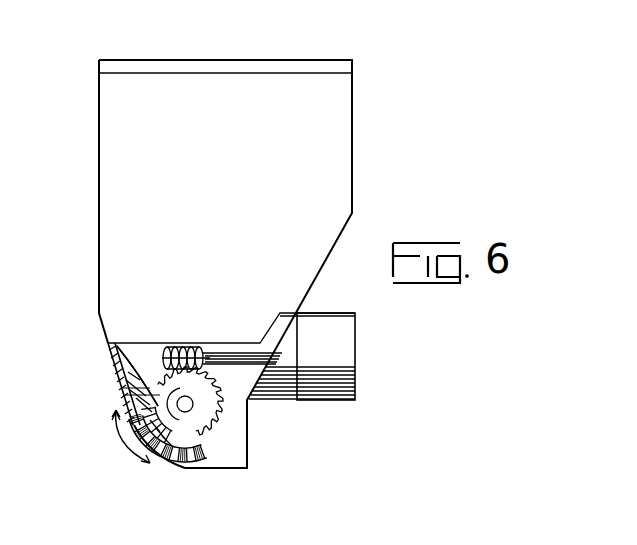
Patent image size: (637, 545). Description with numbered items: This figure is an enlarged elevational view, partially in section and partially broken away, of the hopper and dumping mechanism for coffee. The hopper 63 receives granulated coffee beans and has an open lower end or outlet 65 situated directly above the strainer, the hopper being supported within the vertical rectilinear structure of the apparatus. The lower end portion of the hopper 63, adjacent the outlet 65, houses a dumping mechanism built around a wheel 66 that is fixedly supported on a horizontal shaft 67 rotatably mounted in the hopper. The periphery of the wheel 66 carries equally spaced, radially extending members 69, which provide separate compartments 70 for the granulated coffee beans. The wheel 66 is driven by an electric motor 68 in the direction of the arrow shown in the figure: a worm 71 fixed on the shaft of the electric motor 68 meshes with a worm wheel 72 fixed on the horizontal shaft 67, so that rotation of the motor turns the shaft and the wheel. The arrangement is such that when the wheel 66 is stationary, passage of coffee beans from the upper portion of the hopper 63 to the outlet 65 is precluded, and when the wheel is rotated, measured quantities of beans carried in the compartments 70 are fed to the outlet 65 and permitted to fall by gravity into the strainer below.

The hopper 63 is at (120, 203).
The open lower end or outlet 65 is at (215, 470).
The wheel 66 is at (177, 464).
The horizontal shaft 67 is at (197, 388).
The electric motor 68 is at (348, 402).
The radially extending members 69 is at (137, 394).
The compartments 70 is at (118, 398).
The worm 71 is at (164, 357).
The worm wheel 72 is at (207, 393).